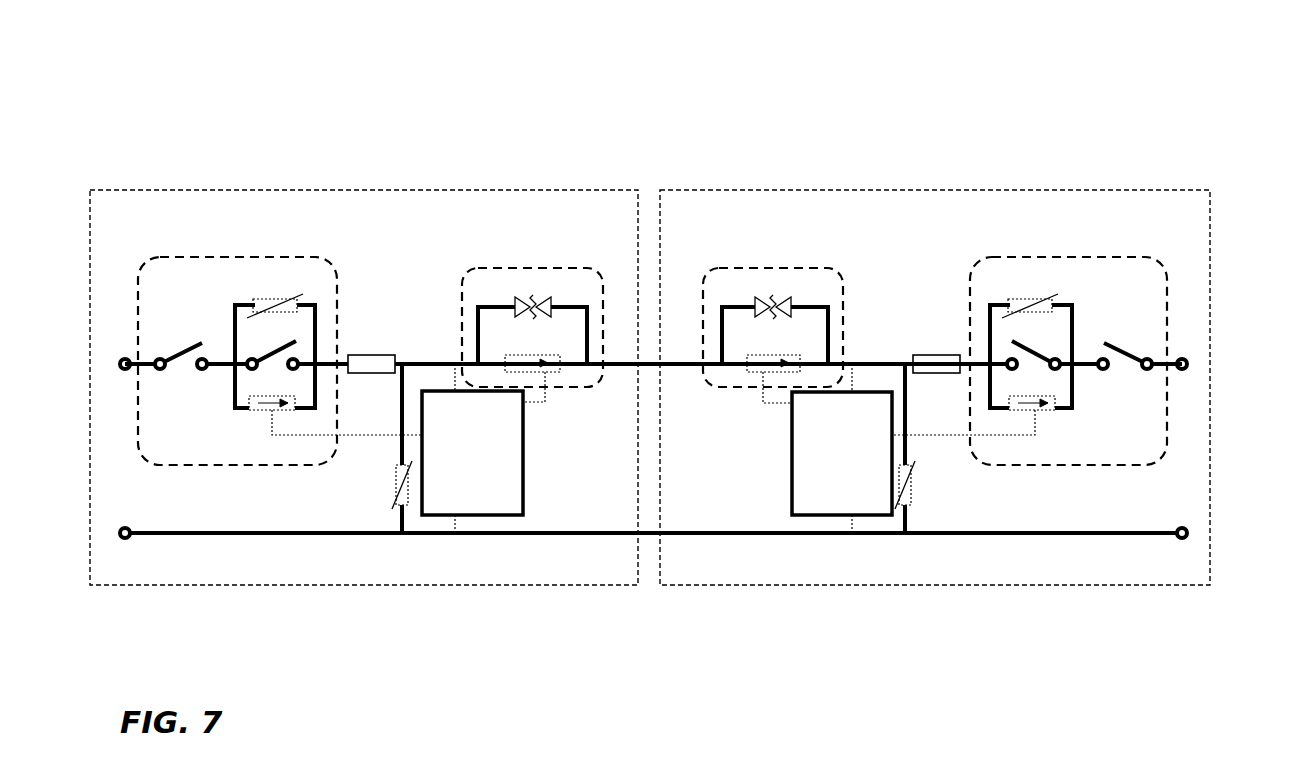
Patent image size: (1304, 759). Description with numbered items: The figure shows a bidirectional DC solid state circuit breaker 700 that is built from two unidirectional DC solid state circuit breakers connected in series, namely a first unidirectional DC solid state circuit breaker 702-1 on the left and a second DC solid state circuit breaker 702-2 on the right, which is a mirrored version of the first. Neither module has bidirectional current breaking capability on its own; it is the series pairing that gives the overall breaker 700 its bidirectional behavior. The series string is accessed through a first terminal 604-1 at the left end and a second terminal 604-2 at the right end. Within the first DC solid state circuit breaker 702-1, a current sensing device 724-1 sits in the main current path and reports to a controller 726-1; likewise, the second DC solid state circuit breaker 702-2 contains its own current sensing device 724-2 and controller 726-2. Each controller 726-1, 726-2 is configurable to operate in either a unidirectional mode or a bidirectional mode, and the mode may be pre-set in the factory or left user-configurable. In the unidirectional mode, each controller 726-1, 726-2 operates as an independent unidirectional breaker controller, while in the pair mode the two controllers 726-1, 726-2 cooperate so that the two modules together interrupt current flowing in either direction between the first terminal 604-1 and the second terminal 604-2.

The DC solid state circuit breaker 700 is at (542, 66).
The first unidirectional DC solid state circuit breaker 702-1 is at (147, 190).
The second DC solid state circuit breaker 702-2 is at (1080, 190).
The first terminal 604-1 is at (118, 360).
The second terminal 604-2 is at (1195, 360).
The current sensing device 724-1 is at (372, 375).
The current sensing device 724-2 is at (938, 375).
The controller 726-1 is at (472, 453).
The controller 726-2 is at (842, 453).